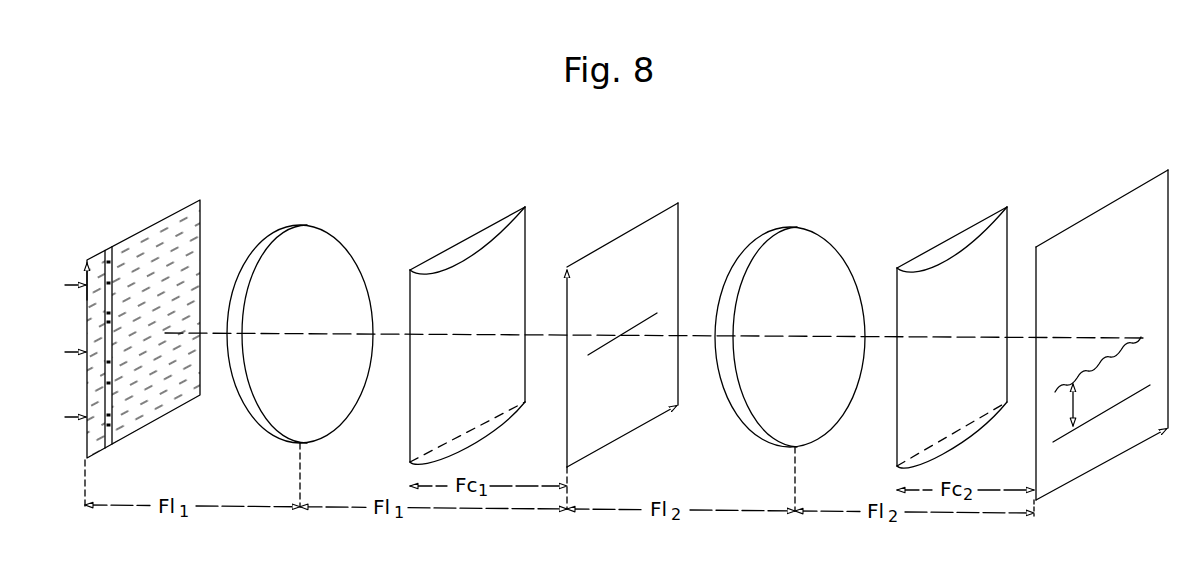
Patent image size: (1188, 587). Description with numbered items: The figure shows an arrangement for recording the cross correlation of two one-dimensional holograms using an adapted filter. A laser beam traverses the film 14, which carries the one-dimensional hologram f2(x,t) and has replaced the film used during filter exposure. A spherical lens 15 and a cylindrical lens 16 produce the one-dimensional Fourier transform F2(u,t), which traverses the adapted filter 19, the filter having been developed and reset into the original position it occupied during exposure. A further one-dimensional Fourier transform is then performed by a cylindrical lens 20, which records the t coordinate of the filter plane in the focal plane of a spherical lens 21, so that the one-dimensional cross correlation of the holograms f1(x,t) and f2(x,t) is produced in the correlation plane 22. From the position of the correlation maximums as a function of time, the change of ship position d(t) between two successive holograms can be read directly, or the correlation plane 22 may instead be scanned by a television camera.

The film 14 is at (148, 231).
The spherical lens 15 is at (298, 234).
The cylindrical lens 16 is at (482, 240).
The adapted filter 19 is at (625, 238).
The spherical lens 21 is at (774, 230).
The cylindrical lens 20 is at (955, 240).
The correlation plane 22 is at (1106, 218).